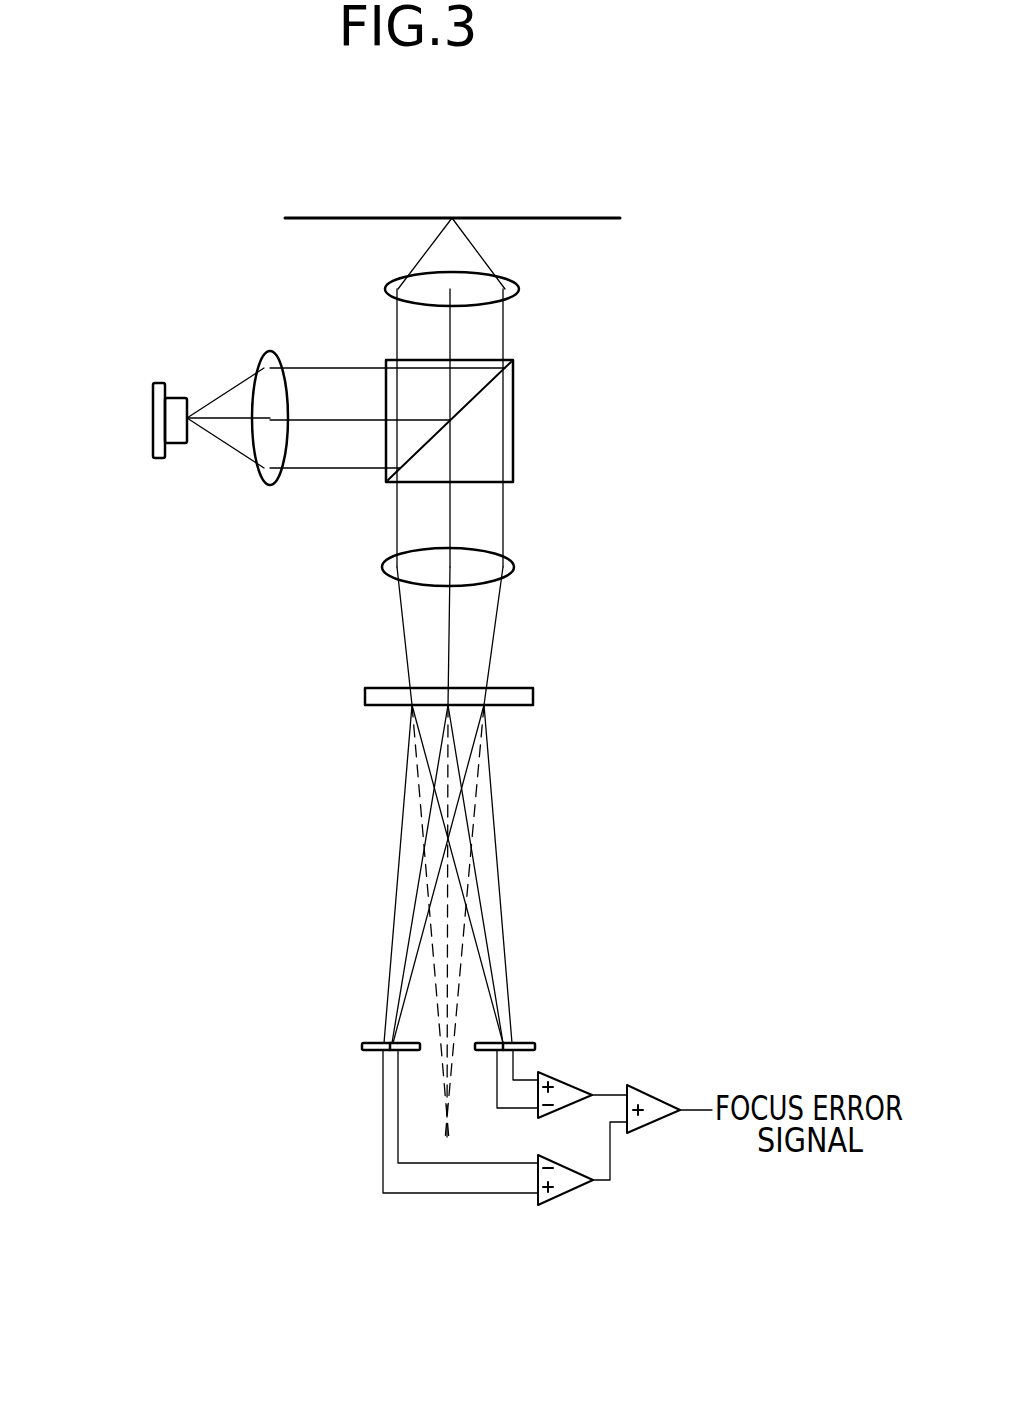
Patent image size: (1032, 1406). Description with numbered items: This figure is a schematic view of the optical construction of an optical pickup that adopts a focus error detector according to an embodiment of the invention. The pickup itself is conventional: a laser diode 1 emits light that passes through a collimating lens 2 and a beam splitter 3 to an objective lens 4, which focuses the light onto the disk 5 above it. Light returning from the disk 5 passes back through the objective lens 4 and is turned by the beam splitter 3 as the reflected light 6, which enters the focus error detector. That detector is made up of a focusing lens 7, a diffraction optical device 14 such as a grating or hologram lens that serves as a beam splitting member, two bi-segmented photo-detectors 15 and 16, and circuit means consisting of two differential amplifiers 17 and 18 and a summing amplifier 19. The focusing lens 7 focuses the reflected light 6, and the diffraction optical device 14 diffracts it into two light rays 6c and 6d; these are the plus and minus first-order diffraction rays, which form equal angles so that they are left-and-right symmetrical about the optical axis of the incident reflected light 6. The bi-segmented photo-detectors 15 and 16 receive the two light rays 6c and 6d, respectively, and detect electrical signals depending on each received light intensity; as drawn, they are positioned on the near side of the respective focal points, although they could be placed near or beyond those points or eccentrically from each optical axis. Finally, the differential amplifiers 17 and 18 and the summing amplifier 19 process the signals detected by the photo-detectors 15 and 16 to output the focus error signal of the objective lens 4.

The laser diode 1 is at (153, 417).
The collimating lens 2 is at (262, 481).
The beam splitter 3 is at (515, 407).
The objective lens 4 is at (520, 289).
The optical disk 5 is at (582, 218).
The reflected light 6 is at (503, 520).
The diffracted light ray 6c is at (402, 830).
The diffracted light ray 6d is at (495, 828).
The focusing lens 7 is at (513, 572).
The diffraction optical device 14 is at (535, 700).
The bi-segmented photo-detector 15 is at (362, 1045).
The bi-segmented photo-detector 16 is at (535, 1040).
The differential amplifier 17 is at (563, 1197).
The differential amplifier 18 is at (573, 1083).
The summing amplifier 19 is at (665, 1122).